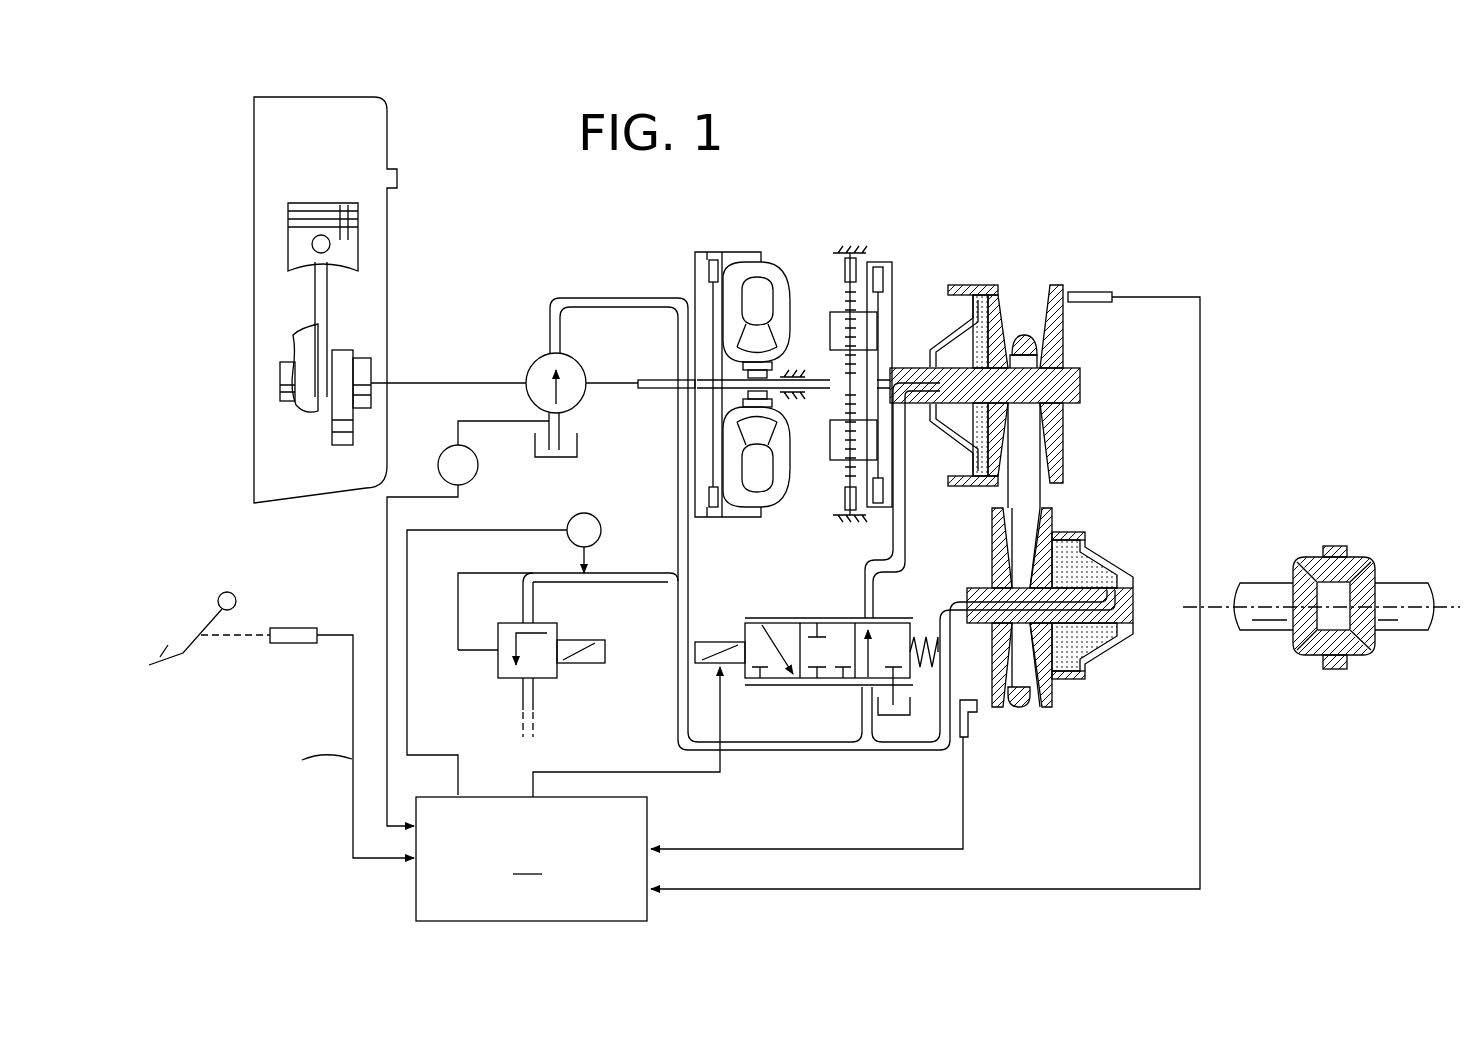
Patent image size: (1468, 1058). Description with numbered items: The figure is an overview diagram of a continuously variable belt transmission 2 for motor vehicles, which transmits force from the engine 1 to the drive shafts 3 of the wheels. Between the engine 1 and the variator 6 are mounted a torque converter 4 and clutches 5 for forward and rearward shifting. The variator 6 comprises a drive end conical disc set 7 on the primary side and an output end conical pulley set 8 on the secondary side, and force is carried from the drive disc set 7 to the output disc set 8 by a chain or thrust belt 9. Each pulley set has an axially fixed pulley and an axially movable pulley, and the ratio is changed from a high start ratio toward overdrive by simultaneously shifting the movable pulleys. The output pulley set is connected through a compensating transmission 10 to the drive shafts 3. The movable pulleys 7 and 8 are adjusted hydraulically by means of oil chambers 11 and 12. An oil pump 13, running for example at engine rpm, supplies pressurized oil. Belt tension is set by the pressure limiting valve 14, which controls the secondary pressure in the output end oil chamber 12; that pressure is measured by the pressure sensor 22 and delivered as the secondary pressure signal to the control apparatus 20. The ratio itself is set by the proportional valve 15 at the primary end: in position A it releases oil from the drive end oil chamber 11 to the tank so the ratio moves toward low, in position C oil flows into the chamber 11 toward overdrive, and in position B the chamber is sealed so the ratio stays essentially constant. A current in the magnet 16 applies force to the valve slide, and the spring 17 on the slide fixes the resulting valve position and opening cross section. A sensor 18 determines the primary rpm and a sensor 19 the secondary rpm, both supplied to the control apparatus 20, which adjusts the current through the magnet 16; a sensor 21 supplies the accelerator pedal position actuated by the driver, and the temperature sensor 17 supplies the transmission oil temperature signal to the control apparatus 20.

The engine 1 is at (377, 128).
The continuously variable belt transmission 2 is at (1052, 200).
The drive shafts 3 is at (1332, 546).
The torque converter 4 is at (777, 277).
The clutches 5 is at (878, 258).
The variator 6 is at (1102, 410).
The drive end conical disc set 7 is at (1023, 332).
The output end conical pulley set 8 is at (1027, 702).
The thrust belt 9 is at (1027, 490).
The compensating transmission 10 is at (1407, 590).
The drive end oil chamber 11 is at (982, 292).
The output end oil chamber 12 is at (1093, 562).
The oil pump 13 is at (541, 367).
The pressure limiting valve 14 is at (497, 665).
The proportional valve 15 is at (807, 673).
The magnet 16 is at (710, 648).
The spring 17 is at (443, 458).
The sensor 18 is at (1093, 292).
The sensor 19 is at (977, 722).
The control apparatus 20 is at (535, 711).
The sensor 21 is at (296, 630).
The pressure sensor 22 is at (594, 513).